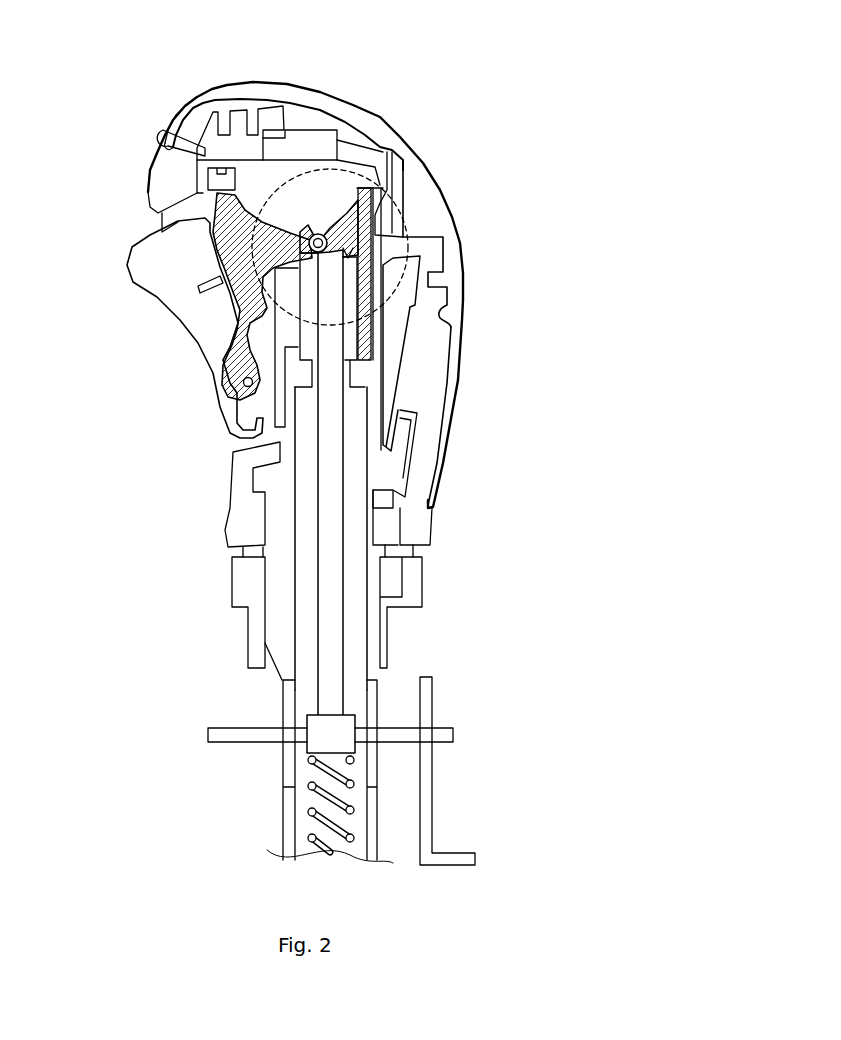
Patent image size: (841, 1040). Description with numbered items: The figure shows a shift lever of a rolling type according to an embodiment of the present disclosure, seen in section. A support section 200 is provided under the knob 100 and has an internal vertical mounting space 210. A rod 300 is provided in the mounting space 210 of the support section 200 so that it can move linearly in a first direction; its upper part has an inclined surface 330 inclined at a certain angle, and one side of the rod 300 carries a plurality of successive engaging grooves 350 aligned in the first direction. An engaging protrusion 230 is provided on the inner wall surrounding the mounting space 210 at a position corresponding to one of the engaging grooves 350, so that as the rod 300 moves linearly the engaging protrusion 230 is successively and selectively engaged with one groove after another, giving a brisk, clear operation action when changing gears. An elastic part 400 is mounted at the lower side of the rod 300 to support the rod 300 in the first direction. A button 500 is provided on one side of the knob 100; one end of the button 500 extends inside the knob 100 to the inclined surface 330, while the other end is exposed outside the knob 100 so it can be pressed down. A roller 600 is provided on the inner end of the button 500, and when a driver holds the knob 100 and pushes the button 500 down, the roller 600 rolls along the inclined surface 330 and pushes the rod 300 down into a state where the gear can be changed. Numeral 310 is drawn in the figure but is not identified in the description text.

The knob 100 is at (415, 180).
The support section 200 is at (277, 582).
The mounting space 210 is at (307, 482).
The engaging protrusion 230 is at (382, 280).
The rod 300 is at (340, 640).
The cam 310 is at (352, 223).
The inclined surface 330 is at (338, 240).
The engaging grooves 350 is at (385, 252).
The elastic part 400 is at (312, 808).
The button 500 is at (247, 295).
The roller 600 is at (292, 232).